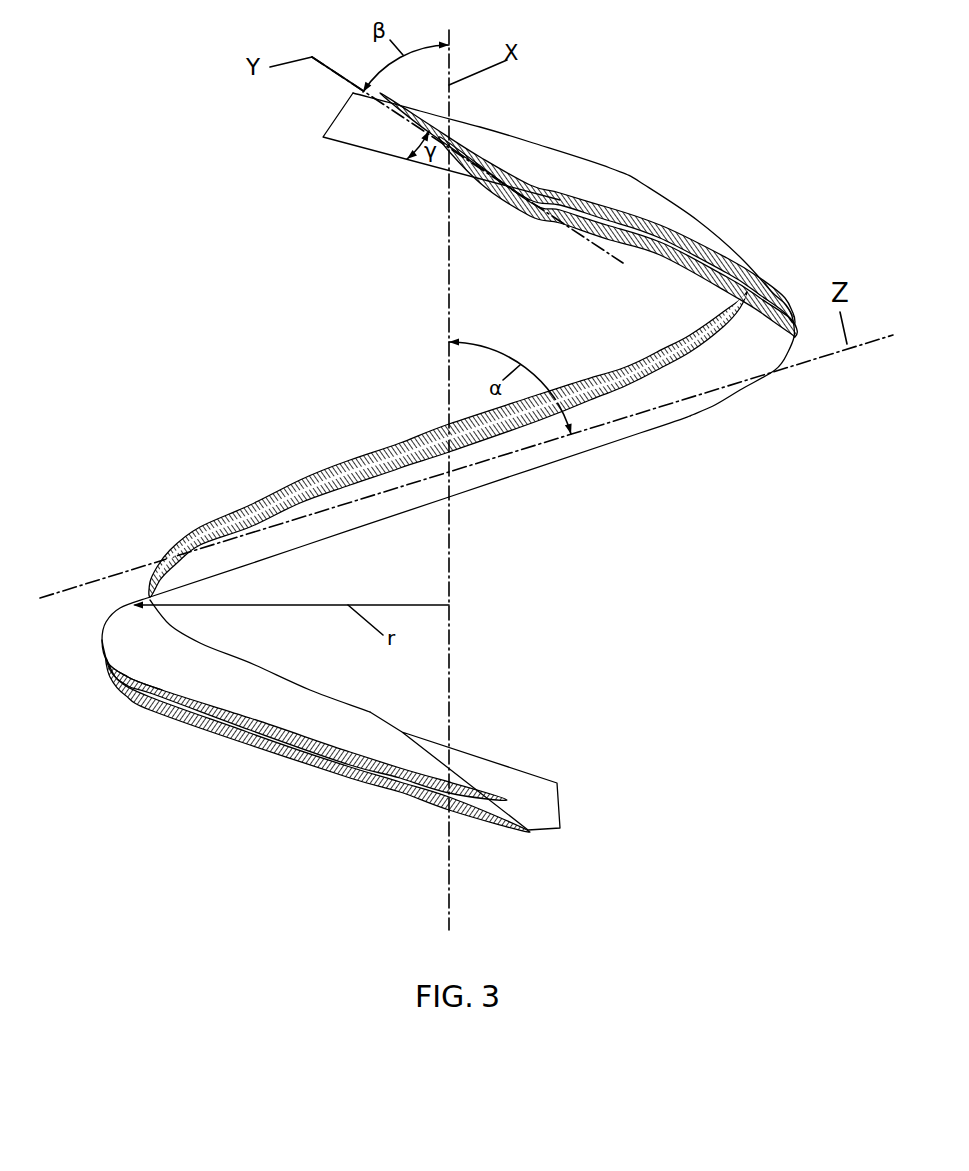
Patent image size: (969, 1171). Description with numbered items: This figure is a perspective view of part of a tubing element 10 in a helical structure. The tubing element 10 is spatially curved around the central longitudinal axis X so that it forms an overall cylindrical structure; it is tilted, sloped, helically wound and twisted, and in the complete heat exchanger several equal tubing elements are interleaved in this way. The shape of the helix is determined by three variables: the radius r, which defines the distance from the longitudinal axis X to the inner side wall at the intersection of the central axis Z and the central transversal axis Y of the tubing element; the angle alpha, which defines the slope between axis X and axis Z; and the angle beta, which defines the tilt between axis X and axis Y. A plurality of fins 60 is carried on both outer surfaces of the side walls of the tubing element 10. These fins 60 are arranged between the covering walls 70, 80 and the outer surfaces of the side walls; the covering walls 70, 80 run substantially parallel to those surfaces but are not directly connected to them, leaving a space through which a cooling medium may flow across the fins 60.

The tubing element 10 is at (553, 588).
The fins 60 is at (481, 168).
The covering wall 70 is at (598, 178).
The covering wall 80 is at (558, 453).